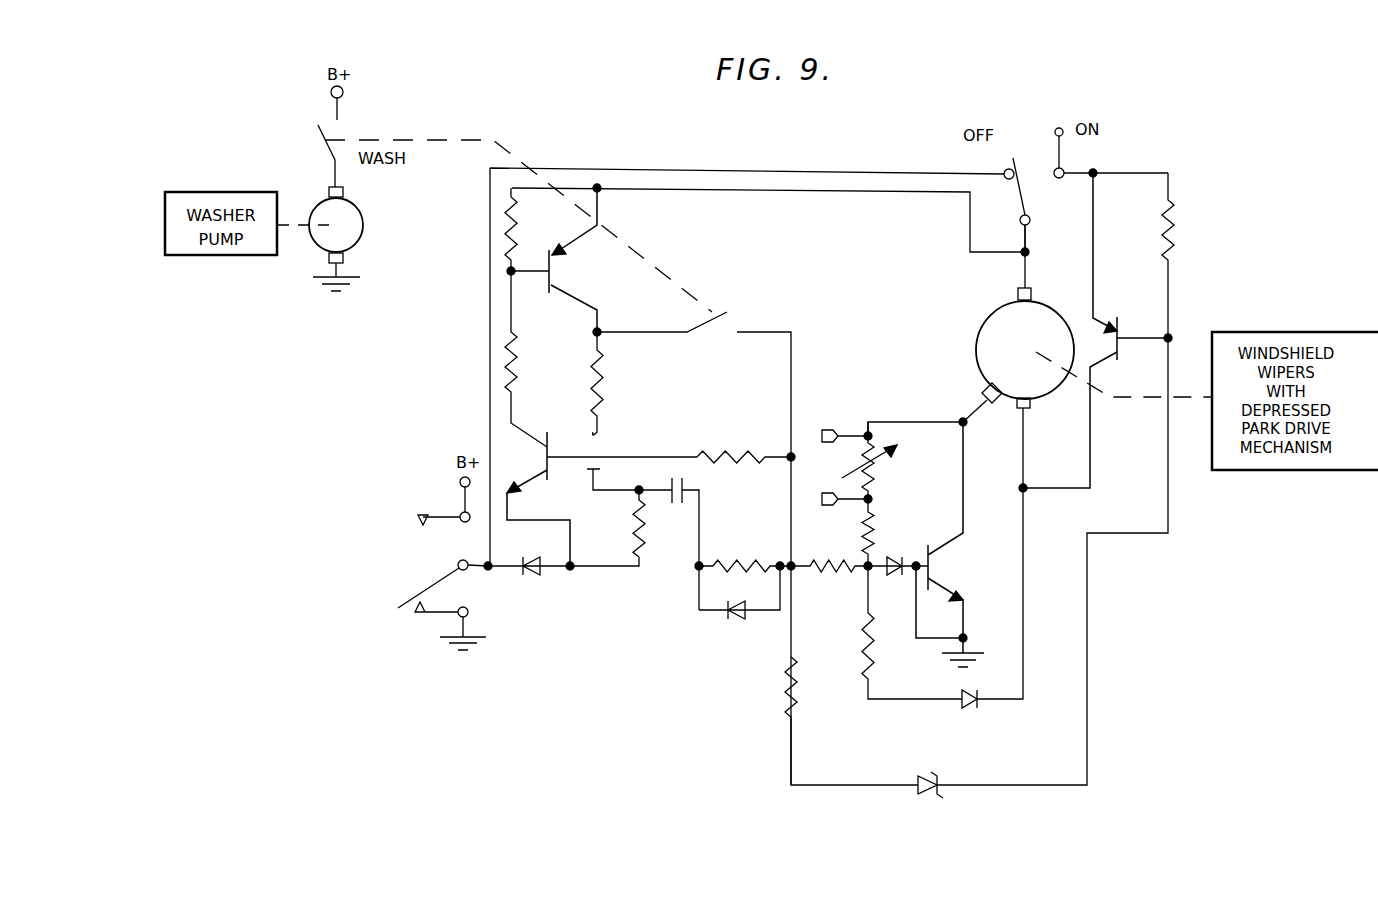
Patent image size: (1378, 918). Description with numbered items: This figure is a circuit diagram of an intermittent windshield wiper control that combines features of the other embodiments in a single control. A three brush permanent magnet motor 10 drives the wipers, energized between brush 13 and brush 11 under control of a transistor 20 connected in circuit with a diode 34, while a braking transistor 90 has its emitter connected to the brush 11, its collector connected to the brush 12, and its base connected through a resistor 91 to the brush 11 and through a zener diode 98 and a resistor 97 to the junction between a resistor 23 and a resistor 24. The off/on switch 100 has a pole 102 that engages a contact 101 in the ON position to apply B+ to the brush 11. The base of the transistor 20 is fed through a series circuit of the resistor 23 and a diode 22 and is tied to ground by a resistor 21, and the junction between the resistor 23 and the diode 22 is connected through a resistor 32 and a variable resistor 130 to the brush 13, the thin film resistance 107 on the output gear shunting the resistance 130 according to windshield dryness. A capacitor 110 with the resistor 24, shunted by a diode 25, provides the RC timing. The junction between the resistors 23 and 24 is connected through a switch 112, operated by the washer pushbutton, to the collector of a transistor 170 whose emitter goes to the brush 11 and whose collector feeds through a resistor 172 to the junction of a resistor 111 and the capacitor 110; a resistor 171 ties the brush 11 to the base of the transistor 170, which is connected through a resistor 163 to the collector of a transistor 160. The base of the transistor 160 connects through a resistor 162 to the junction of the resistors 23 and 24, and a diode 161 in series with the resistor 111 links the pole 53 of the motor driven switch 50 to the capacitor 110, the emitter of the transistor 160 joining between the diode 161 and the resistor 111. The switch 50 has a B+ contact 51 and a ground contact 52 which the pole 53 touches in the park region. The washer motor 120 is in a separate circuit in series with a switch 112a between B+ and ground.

The motor 10 is at (1036, 357).
The brush 11 is at (1016, 291).
The brush 12 is at (1031, 404).
The brush 13 is at (982, 392).
The transistor 20 is at (945, 568).
The resistor 21 is at (860, 632).
The diode 22 is at (902, 556).
The resistor 23 is at (835, 572).
The resistor 24 is at (730, 552).
The diode 25 is at (732, 618).
The resistor 32 is at (858, 525).
The diode 34 is at (972, 710).
The motor driven switch 50 is at (440, 557).
The contact 51 is at (428, 511).
The contact 52 is at (422, 617).
The pole 53 is at (445, 578).
The electrodynamic braking transistor 90 is at (1103, 338).
The resistor 91 is at (1183, 228).
The resistor 97 is at (780, 683).
The zener diode 98 is at (930, 771).
The off/on switch 100 is at (1040, 137).
The contact 101 is at (1064, 151).
The pole 102 is at (1018, 193).
The thin film resistance 107 is at (820, 430).
The capacitor 110 is at (690, 481).
The resistor 111 is at (630, 525).
The switch 112 is at (730, 310).
The switch 112a is at (325, 140).
The washer motor 120 is at (363, 225).
The variable resistor 130 is at (878, 469).
The transistor 160 is at (528, 452).
The diode 161 is at (532, 556).
The resistor 162 is at (728, 450).
The resistor 163 is at (518, 356).
The transistor 170 is at (572, 272).
The resistor 171 is at (515, 225).
The resistor 172 is at (604, 393).